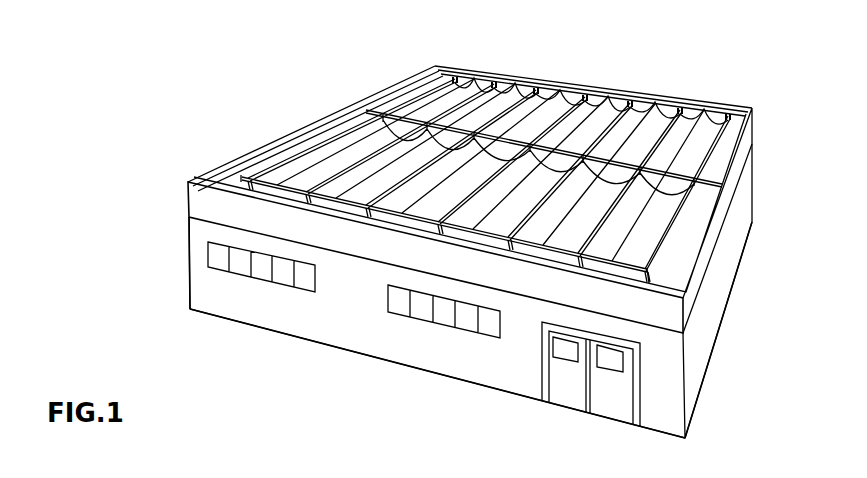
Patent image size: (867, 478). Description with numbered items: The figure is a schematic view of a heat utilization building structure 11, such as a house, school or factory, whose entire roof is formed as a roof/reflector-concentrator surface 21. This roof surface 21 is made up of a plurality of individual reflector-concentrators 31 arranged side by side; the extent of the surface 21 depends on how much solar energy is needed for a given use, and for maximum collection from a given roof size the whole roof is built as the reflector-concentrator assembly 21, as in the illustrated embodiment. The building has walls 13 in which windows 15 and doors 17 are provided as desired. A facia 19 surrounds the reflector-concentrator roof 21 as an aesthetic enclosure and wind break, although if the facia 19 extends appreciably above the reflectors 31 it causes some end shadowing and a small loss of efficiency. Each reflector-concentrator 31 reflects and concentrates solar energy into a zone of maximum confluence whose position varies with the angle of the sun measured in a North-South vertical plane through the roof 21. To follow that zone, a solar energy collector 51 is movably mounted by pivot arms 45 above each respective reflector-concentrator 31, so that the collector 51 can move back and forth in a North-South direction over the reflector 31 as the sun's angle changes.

The heat utilization building structure 11 is at (463, 265).
The walls 13 is at (510, 373).
The windows 15 is at (465, 318).
The doors 17 is at (617, 407).
The facia 19 is at (198, 197).
The roof/reflector-concentrator surface 21 is at (523, 141).
The reflector-concentrator 31 is at (527, 108).
The pivot arms 45 is at (677, 113).
The solar energy collector 51 is at (477, 78).